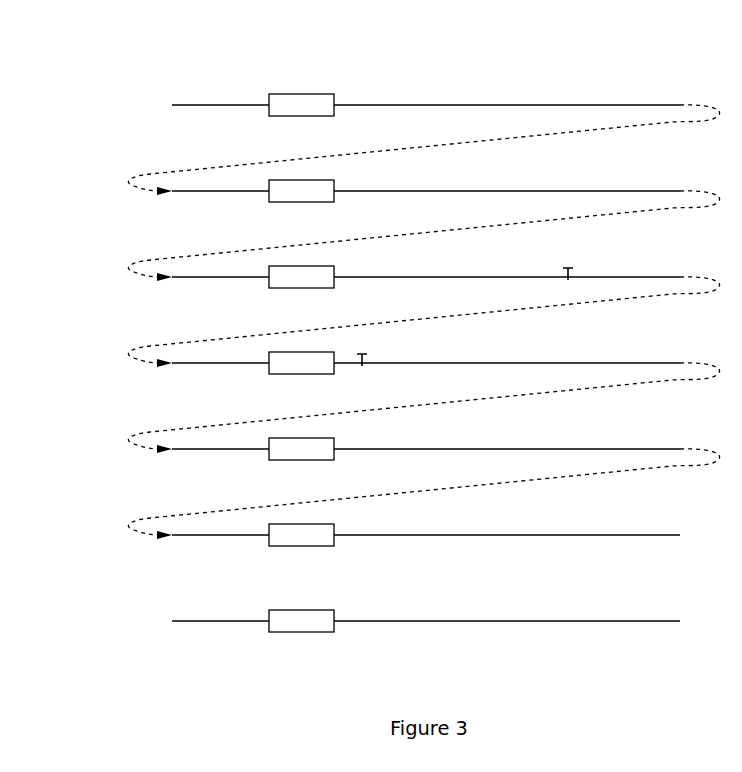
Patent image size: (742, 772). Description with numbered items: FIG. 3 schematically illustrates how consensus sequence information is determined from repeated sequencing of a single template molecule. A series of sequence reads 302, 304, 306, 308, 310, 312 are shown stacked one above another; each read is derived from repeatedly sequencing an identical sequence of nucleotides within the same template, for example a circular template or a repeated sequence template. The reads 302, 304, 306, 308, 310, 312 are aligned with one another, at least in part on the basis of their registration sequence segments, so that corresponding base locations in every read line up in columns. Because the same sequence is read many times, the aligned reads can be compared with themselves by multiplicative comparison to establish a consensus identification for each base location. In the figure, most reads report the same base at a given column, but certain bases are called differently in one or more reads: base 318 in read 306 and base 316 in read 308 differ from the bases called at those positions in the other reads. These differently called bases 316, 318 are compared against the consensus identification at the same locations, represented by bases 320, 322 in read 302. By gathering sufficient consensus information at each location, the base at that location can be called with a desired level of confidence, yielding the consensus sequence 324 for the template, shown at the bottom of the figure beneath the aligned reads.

The sequence read 302 is at (367, 78).
The sequence read 304 is at (367, 189).
The sequence read 306 is at (367, 261).
The sequence read 308 is at (367, 351).
The sequence read 310 is at (367, 447).
The sequence read 312 is at (367, 533).
The differently called base 316 is at (385, 349).
The differently called base 318 is at (584, 265).
The consensus base identification 320 is at (369, 89).
The consensus base identification 322 is at (577, 89).
The consensus sequence 324 is at (374, 620).